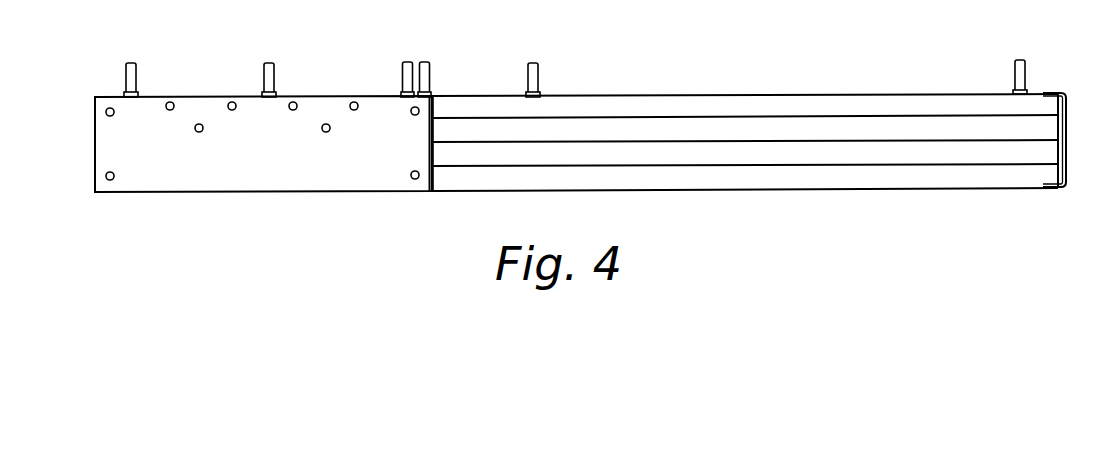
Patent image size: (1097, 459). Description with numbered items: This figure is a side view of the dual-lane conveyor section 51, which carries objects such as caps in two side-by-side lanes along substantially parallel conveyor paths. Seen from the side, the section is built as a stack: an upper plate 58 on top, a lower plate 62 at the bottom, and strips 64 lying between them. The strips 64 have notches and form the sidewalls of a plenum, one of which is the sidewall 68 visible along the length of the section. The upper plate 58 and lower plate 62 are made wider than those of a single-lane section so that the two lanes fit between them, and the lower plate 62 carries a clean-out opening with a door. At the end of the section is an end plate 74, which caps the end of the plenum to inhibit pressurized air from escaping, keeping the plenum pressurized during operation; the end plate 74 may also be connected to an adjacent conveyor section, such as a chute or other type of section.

The dual-lane conveyor section 51 is at (580, 120).
The upper plate 58 is at (728, 94).
The lower plate 62 is at (791, 189).
The strips 64 is at (653, 153).
The sidewall 68 is at (929, 158).
The end plate 74 is at (340, 149).